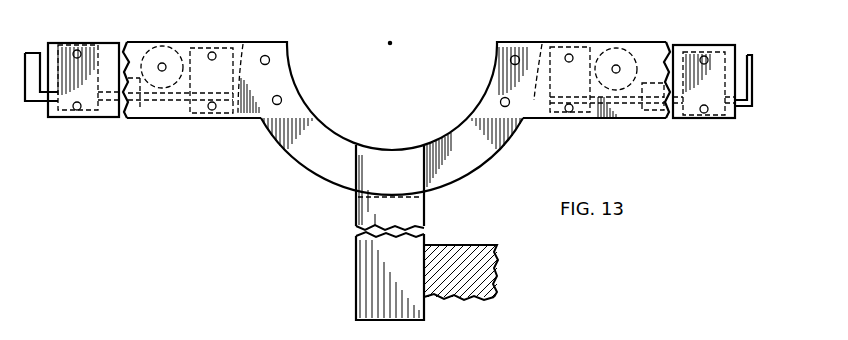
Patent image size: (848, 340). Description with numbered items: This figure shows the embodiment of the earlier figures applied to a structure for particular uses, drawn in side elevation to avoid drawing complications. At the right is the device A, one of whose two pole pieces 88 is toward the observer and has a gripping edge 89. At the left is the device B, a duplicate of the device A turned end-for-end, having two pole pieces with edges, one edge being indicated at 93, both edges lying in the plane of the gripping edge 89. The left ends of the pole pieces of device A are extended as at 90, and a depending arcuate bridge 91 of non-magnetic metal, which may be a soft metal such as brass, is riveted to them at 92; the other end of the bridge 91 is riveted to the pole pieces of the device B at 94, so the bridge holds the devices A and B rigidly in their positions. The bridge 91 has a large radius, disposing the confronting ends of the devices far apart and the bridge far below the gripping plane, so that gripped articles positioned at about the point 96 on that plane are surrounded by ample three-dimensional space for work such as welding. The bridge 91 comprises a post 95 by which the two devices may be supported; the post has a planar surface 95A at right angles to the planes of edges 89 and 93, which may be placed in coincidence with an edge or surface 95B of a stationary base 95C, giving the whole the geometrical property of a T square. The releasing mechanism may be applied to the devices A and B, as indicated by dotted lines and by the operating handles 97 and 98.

The pole piece 88 is at (646, 72).
The gripping edge 89 is at (588, 43).
The extended left end of the pole pieces 90 is at (507, 123).
The depending arcuate bridge 91 is at (438, 189).
The rivets 92 is at (505, 98).
The edge of pole piece of device B 93 is at (198, 44).
The rivets 94 is at (280, 97).
The post 95 is at (358, 209).
The planar surface of post 95A is at (425, 246).
The edge or surface of stationary base 95B is at (421, 310).
The stationary base 95C is at (443, 290).
The point on the gripping plane 96 is at (390, 42).
The operating handle 97 is at (754, 66).
The operating handle 98 is at (33, 52).
The device A is at (604, 46).
The duplicate device B is at (159, 43).